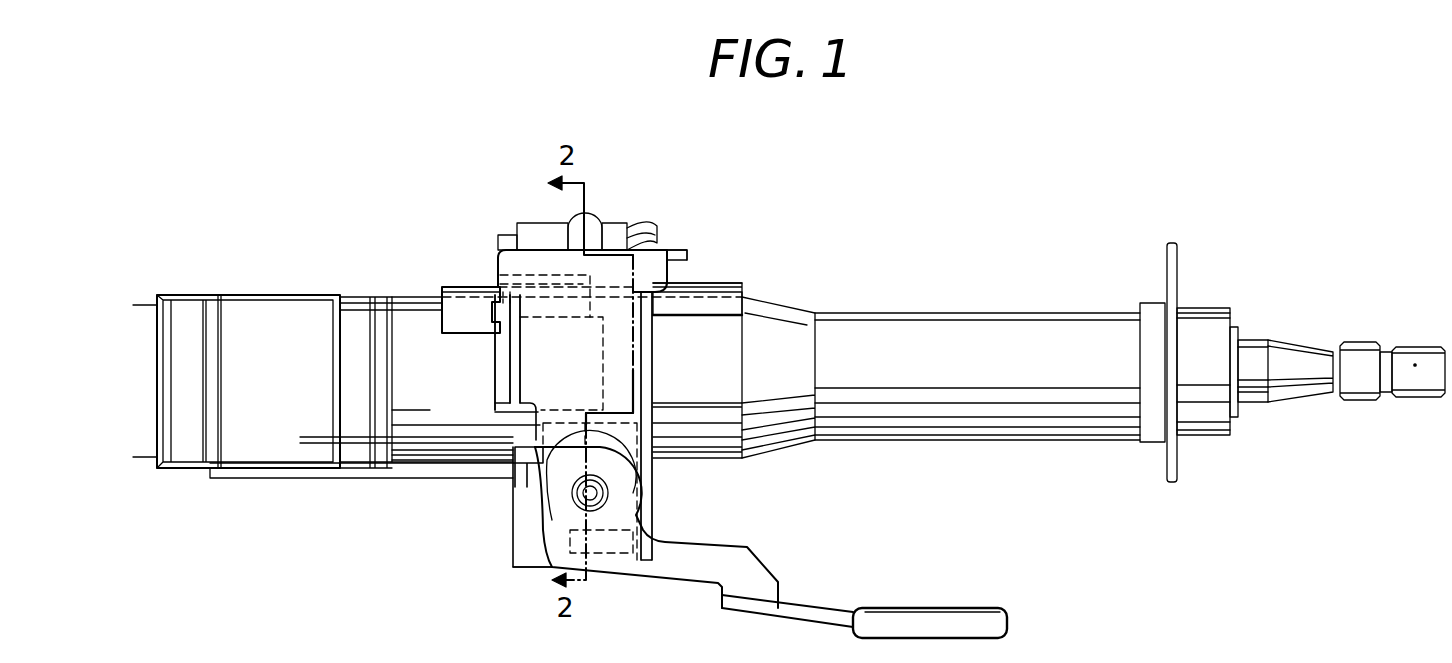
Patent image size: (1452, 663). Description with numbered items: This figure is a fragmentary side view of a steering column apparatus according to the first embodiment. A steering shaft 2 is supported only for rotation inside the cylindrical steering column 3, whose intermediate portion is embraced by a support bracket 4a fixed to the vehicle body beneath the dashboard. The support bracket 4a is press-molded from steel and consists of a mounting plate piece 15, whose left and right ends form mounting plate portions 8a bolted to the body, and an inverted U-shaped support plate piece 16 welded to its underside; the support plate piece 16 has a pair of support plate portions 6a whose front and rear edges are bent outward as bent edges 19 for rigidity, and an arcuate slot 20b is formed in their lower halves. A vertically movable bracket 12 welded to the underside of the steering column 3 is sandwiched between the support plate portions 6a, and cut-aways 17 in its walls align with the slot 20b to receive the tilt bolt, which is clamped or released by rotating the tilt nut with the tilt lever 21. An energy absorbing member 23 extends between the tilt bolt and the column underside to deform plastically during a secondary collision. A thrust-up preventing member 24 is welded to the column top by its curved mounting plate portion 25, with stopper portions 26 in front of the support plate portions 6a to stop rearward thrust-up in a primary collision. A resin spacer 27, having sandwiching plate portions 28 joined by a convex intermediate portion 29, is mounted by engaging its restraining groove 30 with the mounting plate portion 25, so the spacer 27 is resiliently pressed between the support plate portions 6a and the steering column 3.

The steering shaft 2 is at (1258, 392).
The steering column 3 is at (413, 442).
The support bracket 4a is at (669, 248).
The support plate portions 6a is at (623, 357).
The mounting plate portions 8a is at (508, 268).
The vertically movable bracket 12 is at (633, 577).
The mounting plate piece 15 is at (537, 257).
The support plate piece 16 is at (627, 337).
The cut-aways 17 is at (643, 510).
The bent edges 19 is at (513, 367).
The slot 20b is at (612, 577).
The tilt lever 21 is at (815, 612).
The energy absorbing member 23 is at (322, 470).
The thrust-up preventing member 24 is at (713, 283).
The mounting plate portion 25 is at (692, 283).
The stopper portions 26 is at (458, 325).
The spacer 27 is at (493, 432).
The sandwiching plate portions 28 is at (502, 355).
The intermediate portion 29 is at (510, 228).
The restraining groove 30 is at (560, 283).